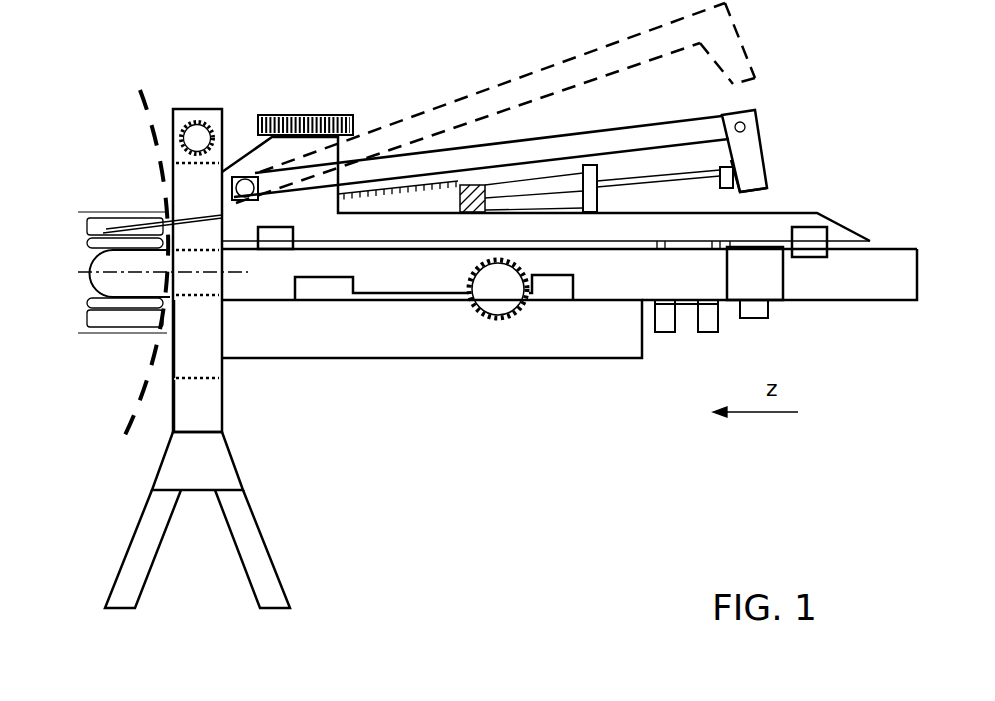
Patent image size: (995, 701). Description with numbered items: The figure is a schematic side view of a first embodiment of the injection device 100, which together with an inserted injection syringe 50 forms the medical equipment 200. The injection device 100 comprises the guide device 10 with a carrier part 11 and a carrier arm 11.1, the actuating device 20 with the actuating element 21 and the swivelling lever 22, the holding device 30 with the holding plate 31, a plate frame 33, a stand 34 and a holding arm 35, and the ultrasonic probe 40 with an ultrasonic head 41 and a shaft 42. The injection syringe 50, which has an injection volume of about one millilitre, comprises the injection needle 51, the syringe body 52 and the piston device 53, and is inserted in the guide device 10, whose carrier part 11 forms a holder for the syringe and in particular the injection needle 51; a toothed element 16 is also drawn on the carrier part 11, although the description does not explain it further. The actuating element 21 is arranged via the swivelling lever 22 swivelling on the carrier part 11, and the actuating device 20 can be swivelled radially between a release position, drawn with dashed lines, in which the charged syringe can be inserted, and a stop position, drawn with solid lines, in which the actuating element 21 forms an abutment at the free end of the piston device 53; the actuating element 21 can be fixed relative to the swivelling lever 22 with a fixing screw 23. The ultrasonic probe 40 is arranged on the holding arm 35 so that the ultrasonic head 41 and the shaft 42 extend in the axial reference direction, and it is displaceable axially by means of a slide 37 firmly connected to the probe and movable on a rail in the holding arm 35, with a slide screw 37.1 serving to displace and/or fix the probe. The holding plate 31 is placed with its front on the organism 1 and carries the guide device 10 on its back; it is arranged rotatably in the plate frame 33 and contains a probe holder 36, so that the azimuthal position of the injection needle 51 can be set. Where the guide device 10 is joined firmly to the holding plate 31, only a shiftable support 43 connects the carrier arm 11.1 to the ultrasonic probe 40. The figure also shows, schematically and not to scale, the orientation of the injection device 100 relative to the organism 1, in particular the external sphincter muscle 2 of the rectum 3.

The organism 1 is at (126, 139).
The external sphincter muscle 2 is at (125, 224).
The rectum 3 is at (120, 327).
The guide device 10 is at (338, 229).
The carrier part 11 is at (197, 257).
The carrier arm 11.1 is at (430, 232).
The toothed rack 16 is at (300, 114).
The actuating device 20 is at (805, 127).
The actuating element 21 is at (750, 167).
The swivelling lever 22 is at (667, 132).
The fixing screw 23 is at (747, 127).
The holding device 30 is at (218, 476).
The holding plate 31 is at (210, 365).
The plate frame 33 is at (213, 422).
The stand 34 is at (260, 542).
The holding arm 35 is at (367, 347).
The probe holder 36 is at (208, 293).
The slide 37 is at (543, 290).
The slide screw 37.1 is at (487, 295).
The ultrasonic probe 40 is at (672, 288).
The ultrasonic head 41 is at (137, 276).
The shaft 42 is at (807, 283).
The shiftable support 43 is at (813, 240).
The injection syringe 50 is at (625, 185).
The injection needle 51 is at (160, 228).
The syringe body 52 is at (440, 187).
The piston device 53 is at (550, 193).
The injection device 100 is at (441, 88).
The medical equipment 200 is at (812, 65).